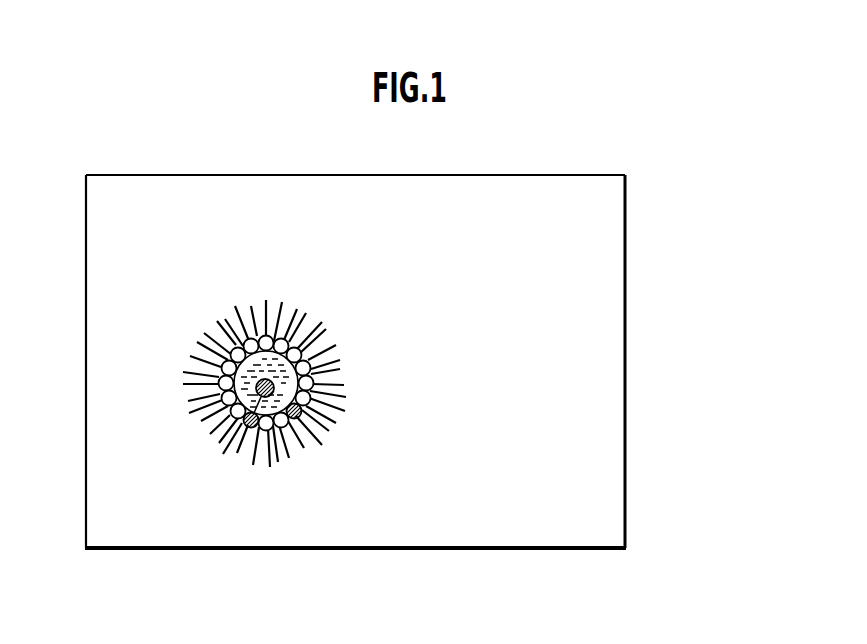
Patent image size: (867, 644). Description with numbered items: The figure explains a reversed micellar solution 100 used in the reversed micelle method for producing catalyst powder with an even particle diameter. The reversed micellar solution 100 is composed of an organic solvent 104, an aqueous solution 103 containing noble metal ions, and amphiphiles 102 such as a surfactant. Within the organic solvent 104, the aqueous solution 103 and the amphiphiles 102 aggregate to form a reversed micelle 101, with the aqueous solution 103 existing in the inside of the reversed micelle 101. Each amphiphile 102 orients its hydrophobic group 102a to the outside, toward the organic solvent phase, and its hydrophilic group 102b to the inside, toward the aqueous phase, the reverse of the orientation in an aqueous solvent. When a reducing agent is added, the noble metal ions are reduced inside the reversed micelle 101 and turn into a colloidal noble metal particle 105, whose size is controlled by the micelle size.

The reversed micellar solution 100 is at (636, 152).
The reversed micelle 101 is at (232, 288).
The amphiphile 102 is at (436, 270).
The hydrophobic group 102a is at (313, 323).
The hydrophilic group 102b is at (303, 349).
The aqueous solution 103 is at (301, 418).
The organic solvent 104 is at (585, 269).
The colloidal noble metal particle 105 is at (245, 422).